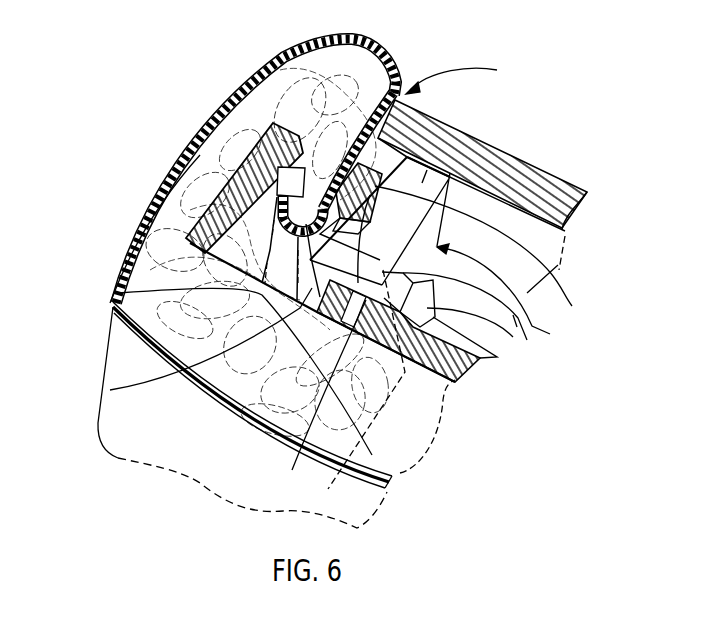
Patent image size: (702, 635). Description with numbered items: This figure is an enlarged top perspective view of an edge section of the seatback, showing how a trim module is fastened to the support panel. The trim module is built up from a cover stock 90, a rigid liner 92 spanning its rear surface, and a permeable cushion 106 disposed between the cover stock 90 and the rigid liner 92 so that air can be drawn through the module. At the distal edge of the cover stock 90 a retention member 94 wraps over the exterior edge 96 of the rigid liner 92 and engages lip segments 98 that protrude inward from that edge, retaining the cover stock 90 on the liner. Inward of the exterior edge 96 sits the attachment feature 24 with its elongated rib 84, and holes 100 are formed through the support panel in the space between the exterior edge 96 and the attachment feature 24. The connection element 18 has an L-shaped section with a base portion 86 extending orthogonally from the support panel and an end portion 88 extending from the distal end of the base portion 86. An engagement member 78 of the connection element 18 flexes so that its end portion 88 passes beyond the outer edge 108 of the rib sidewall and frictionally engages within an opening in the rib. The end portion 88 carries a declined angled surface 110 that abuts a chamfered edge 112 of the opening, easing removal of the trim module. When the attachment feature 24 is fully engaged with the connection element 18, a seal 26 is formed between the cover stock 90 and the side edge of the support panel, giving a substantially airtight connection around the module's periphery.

The connection element 18 is at (484, 358).
The attachment feature 24 is at (493, 257).
The elongated rib 84 is at (493, 257).
The seal 26 is at (461, 75).
The engagement member 78 is at (483, 336).
The base portion 86 is at (475, 139).
The end portion 88 is at (346, 462).
The cover stock 90 is at (223, 113).
The rigid liner 92 is at (482, 364).
The retention member 94 is at (342, 168).
The exterior edge 96 is at (232, 186).
The lip segments 98 is at (292, 168).
The holes 100 is at (118, 293).
The permeable cushion 106 is at (160, 210).
The outer edge 108 is at (400, 140).
The declined angled surface 110 is at (110, 390).
The chamfered edge 112 is at (313, 413).